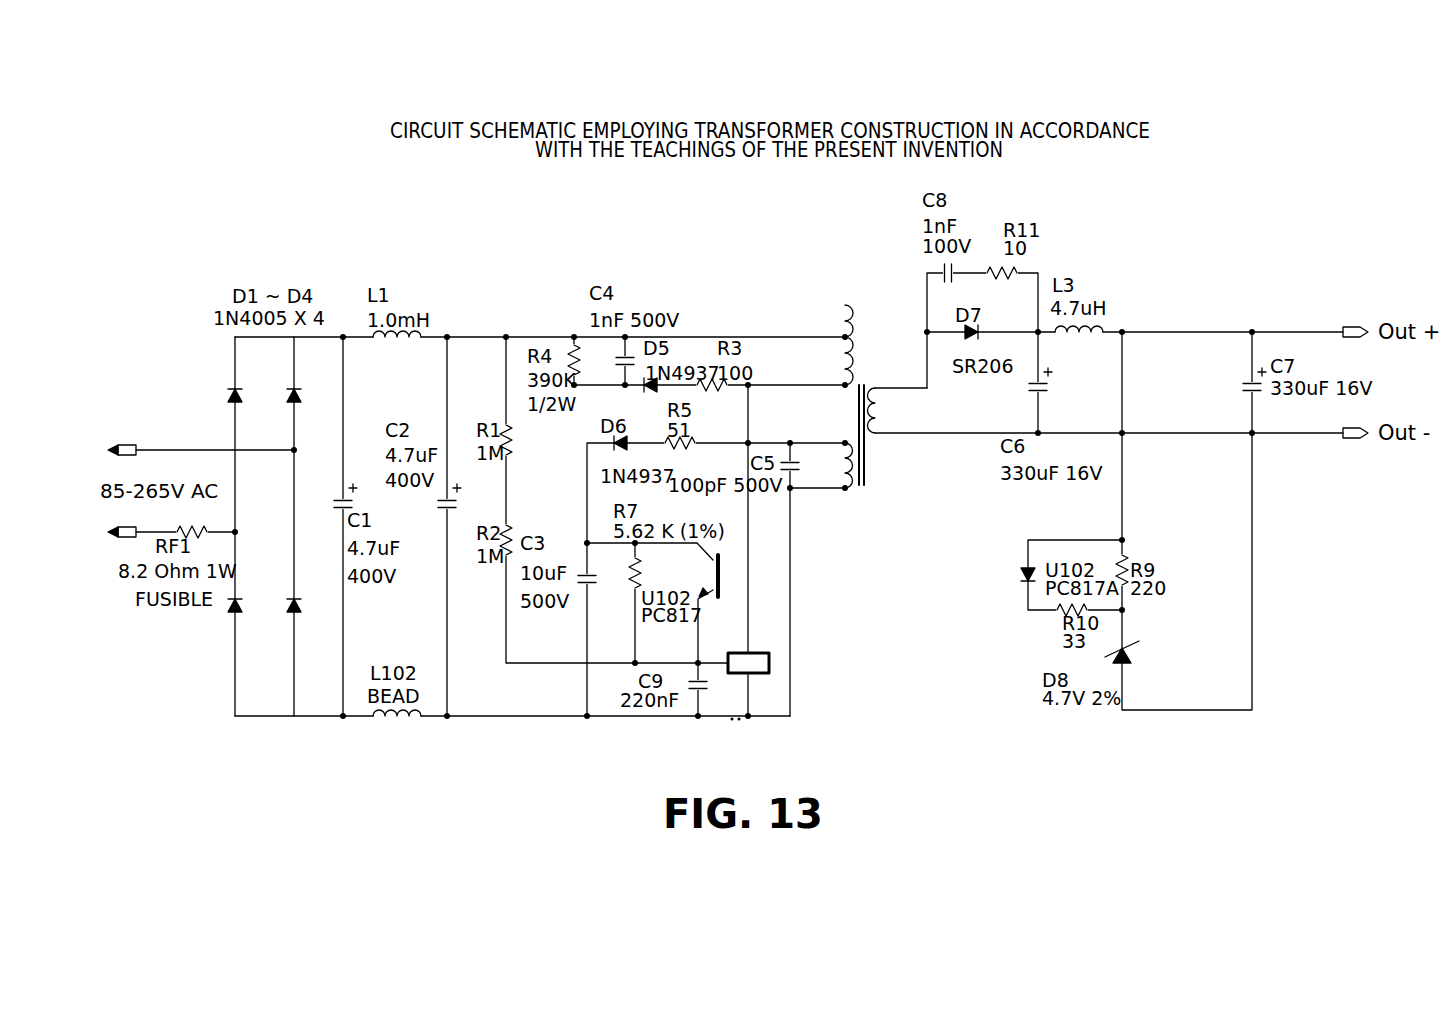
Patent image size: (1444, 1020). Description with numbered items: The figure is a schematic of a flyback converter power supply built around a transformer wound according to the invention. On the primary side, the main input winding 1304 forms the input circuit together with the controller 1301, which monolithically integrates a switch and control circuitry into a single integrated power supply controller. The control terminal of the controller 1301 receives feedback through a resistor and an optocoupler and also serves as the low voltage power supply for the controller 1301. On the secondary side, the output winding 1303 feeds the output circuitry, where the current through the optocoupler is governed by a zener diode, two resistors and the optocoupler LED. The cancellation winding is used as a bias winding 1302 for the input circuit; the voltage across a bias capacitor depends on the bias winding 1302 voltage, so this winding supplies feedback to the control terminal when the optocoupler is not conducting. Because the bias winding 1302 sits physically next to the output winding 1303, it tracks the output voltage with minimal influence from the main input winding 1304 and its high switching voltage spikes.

The controller 1301 is at (737, 670).
The bias winding 1302 is at (848, 466).
The output winding 1303 is at (885, 405).
The main input winding 1304 is at (830, 356).